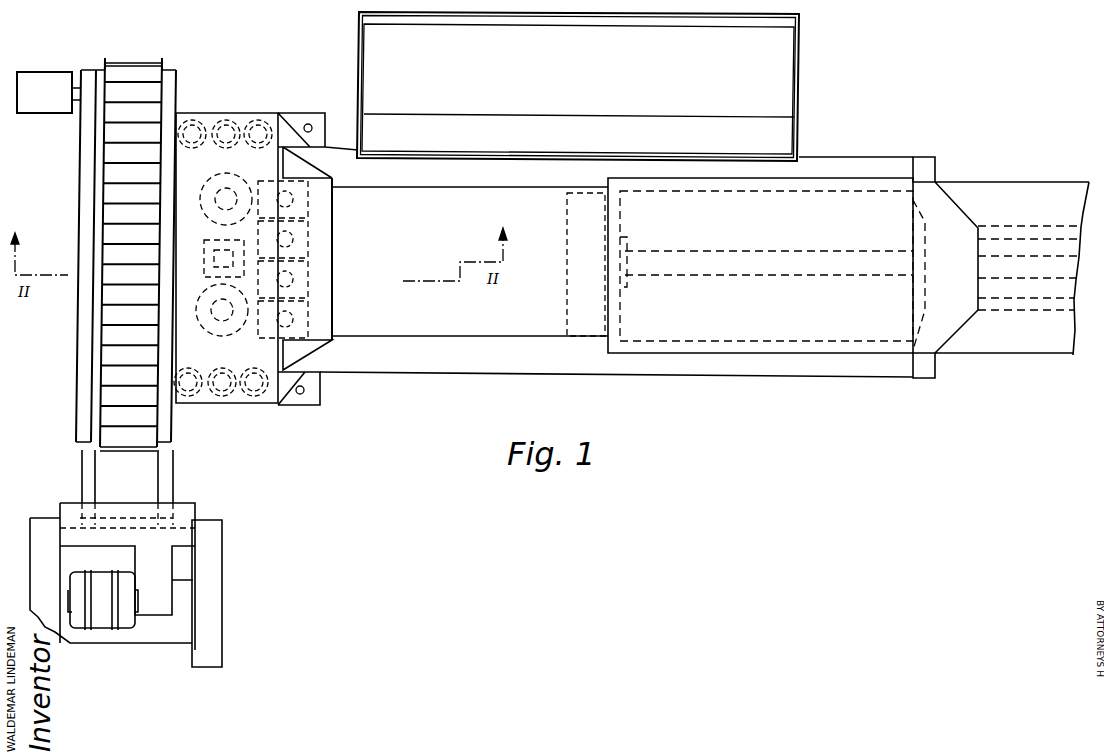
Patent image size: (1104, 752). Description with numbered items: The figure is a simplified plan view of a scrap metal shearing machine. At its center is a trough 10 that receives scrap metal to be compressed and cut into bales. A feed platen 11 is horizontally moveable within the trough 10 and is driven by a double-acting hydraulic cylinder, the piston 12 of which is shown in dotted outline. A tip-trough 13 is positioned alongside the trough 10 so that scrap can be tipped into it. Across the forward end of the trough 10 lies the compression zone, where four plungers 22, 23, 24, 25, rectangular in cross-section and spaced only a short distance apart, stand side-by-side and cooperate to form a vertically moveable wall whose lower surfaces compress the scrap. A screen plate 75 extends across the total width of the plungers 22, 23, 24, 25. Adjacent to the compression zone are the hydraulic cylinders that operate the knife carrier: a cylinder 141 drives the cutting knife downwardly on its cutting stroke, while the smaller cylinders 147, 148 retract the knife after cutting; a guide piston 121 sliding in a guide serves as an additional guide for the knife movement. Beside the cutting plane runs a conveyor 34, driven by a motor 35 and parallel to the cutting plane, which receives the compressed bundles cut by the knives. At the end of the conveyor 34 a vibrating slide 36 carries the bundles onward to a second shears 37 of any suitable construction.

The trough 10 is at (425, 337).
The feed platen 11 is at (576, 303).
The piston 12 is at (1020, 258).
The tip-trough 13 is at (790, 76).
The plunger 22 is at (308, 323).
The plunger 23 is at (308, 282).
The plunger 24 is at (308, 243).
The plunger 25 is at (308, 212).
The conveyor 34 is at (136, 78).
The motor 35 is at (50, 78).
The vibrating slide 36 is at (158, 480).
The second shears 37 is at (190, 562).
The screen plate 75 is at (332, 231).
The guide piston 121 is at (206, 245).
The hydraulic cylinder 141 is at (207, 181).
The hydraulic cylinder 147 is at (233, 120).
The hydraulic cylinder 148 is at (227, 402).